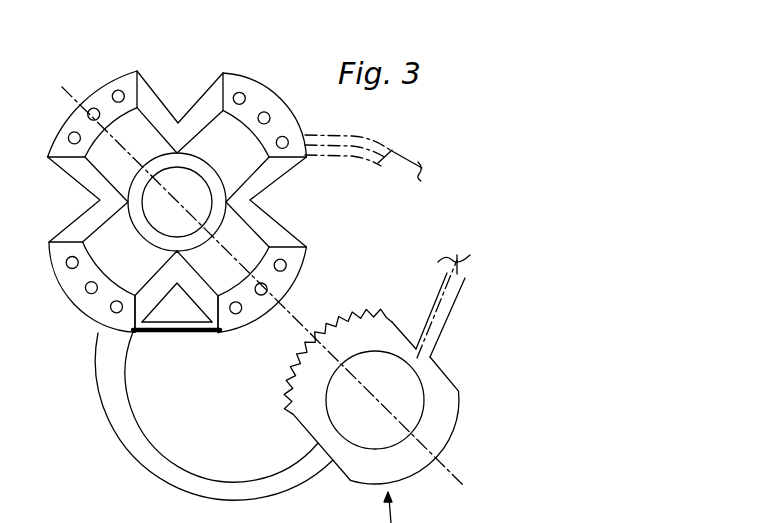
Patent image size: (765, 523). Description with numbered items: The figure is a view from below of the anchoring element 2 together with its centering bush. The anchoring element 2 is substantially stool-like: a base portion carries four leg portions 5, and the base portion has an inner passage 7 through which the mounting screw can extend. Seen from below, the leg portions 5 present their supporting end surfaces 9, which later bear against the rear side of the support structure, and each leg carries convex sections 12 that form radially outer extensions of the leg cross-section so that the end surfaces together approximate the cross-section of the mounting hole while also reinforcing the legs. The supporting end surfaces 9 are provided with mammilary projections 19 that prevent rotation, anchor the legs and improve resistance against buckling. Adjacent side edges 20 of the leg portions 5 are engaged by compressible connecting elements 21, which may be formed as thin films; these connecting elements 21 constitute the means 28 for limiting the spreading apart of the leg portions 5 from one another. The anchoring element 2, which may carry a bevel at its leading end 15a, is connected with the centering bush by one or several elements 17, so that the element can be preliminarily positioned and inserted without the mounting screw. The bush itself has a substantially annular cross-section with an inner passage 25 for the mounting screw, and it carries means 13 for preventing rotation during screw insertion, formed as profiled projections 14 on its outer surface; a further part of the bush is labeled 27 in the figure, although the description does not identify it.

The anchoring element 2 is at (77, 319).
The leg portions 5 is at (133, 125).
The inner passage 7 is at (180, 191).
The supporting end surfaces 9 is at (84, 95).
The convex sections 12 is at (60, 283).
The means for preventing rotation 13 is at (343, 344).
The profiled projections 14 is at (353, 320).
The leading end 15a is at (103, 516).
The connecting elements 17 is at (377, 170).
The mammilary projections 19 is at (271, 118).
The side edges 20 is at (164, 322).
The connecting elements 21 is at (193, 324).
The inner passage 25 is at (385, 389).
The gear rim 27 is at (447, 374).
The means for limiting spreading 28 is at (176, 331).